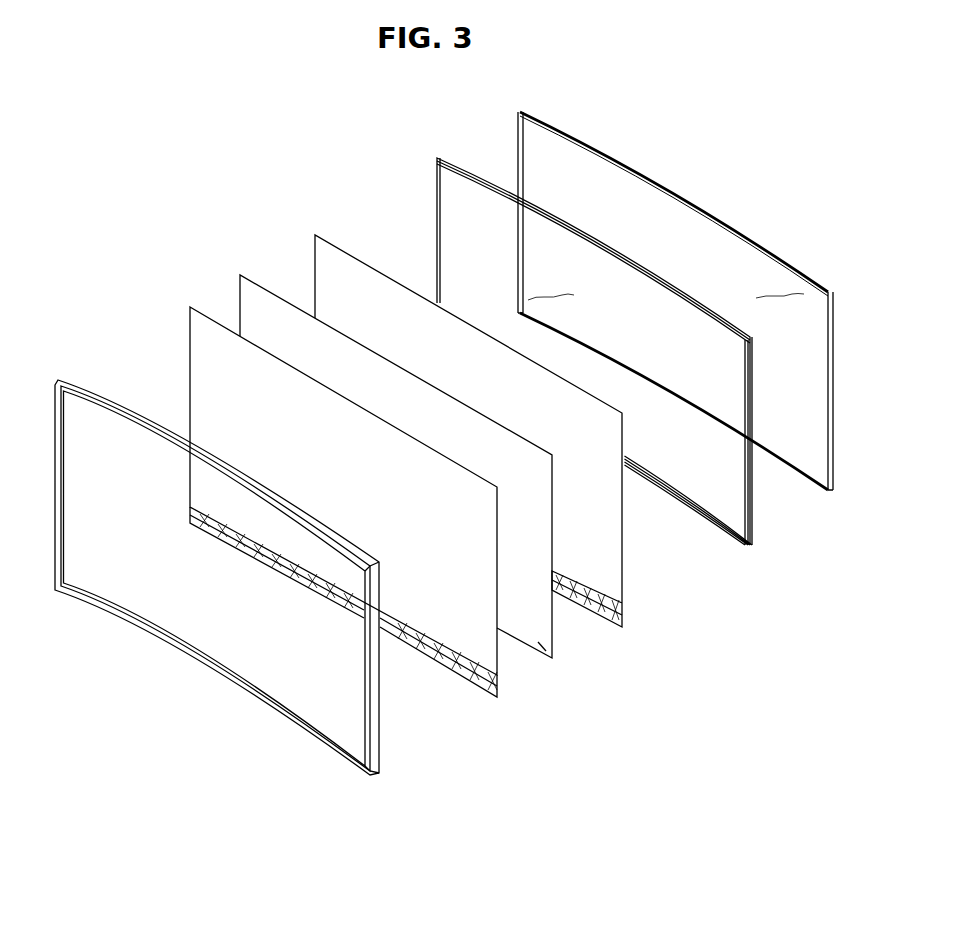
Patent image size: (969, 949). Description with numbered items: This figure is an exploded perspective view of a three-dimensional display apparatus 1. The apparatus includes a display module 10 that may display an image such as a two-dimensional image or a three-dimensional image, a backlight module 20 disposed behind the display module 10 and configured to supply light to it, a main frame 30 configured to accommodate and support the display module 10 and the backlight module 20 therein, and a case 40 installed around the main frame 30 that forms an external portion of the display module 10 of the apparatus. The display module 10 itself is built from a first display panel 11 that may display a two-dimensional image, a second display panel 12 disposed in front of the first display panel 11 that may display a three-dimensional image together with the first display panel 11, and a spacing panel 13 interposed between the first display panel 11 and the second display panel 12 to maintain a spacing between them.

The 3D display apparatus 1 is at (277, 192).
The display module 10 is at (703, 683).
The first display panel 11 is at (623, 598).
The second display panel 12 is at (499, 677).
The spacing panel 13 is at (552, 658).
The backlight module 20 is at (832, 494).
The main frame 30 is at (757, 547).
The case 40 is at (316, 743).